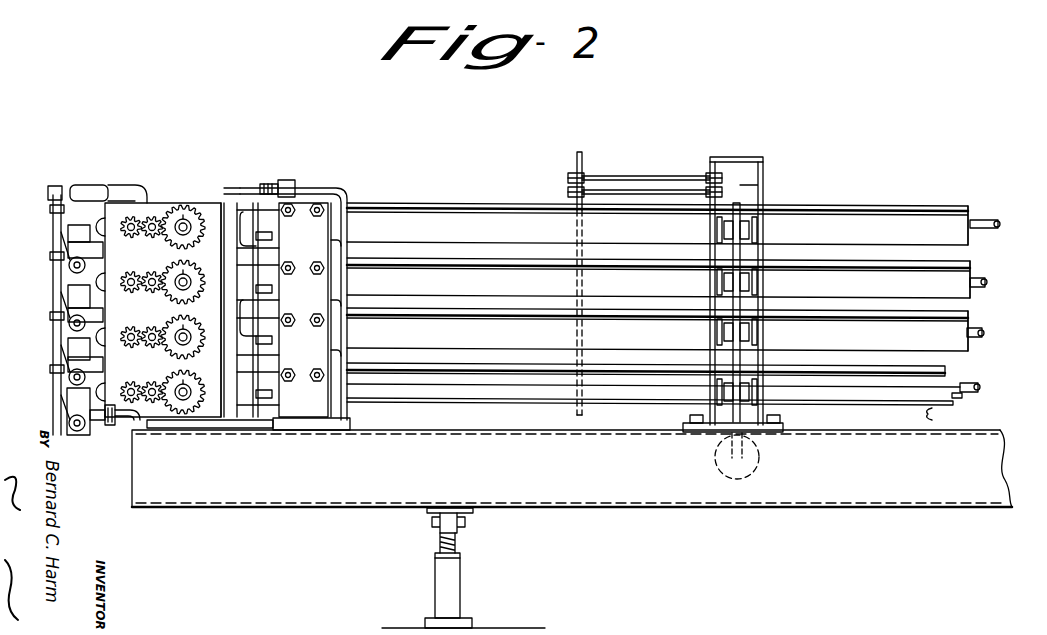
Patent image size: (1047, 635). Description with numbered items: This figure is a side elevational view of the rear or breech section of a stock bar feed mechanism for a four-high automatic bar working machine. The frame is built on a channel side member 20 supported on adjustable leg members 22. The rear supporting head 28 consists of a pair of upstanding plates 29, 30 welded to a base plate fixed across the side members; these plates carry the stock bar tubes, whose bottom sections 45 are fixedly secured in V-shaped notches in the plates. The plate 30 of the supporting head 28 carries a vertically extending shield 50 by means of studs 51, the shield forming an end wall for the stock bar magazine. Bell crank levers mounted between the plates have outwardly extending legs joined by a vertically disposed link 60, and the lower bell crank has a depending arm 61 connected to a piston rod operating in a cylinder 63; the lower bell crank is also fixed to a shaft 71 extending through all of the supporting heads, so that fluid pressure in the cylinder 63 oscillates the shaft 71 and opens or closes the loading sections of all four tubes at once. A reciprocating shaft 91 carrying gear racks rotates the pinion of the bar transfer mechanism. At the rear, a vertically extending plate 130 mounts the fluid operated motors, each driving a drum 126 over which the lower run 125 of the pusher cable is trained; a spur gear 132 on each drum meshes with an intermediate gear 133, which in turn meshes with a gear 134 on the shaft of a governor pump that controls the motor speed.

The channel side member 20 is at (572, 468).
The adjustable leg member 22 is at (461, 581).
The supporting head 28 is at (765, 149).
The plate 29 is at (764, 190).
The plate 30 is at (710, 160).
The bottom section 45 is at (658, 313).
The shield 50 is at (583, 152).
The stud 51 is at (620, 178).
The link 60 is at (740, 259).
The depending arm 61 is at (727, 424).
The cylinder 63 is at (760, 467).
The shaft 71 is at (962, 406).
The shaft 91 is at (999, 219).
The lower run 125 is at (990, 256).
The drum 126 is at (184, 209).
The plate 130 is at (150, 207).
The spur gear 132 is at (210, 203).
The intermediate gear 133 is at (158, 238).
The gear 134 is at (131, 326).